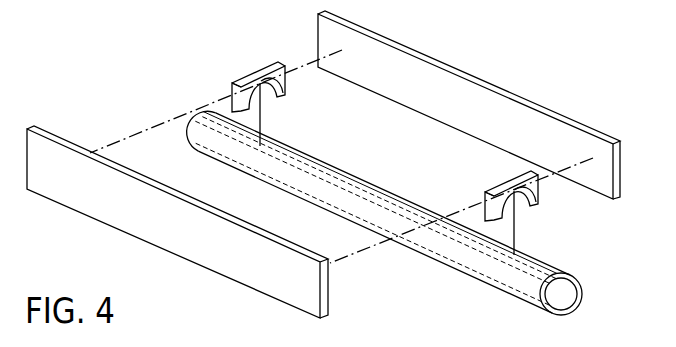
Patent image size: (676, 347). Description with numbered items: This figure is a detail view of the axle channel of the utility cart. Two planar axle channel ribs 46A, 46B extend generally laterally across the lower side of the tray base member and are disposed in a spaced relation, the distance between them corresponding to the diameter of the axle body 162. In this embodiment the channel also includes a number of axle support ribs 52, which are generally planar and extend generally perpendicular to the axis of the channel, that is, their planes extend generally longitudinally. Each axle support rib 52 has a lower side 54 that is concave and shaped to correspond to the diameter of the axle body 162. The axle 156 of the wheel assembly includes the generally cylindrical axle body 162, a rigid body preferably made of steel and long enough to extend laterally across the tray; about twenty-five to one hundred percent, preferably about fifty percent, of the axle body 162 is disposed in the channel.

The axle channel rib 46A is at (482, 118).
The axle channel rib 46B is at (178, 233).
The axle support rib 52 is at (280, 77).
The axle support rib lower side 54 is at (262, 117).
The axle 156 is at (296, 197).
The axle body 162 is at (318, 202).